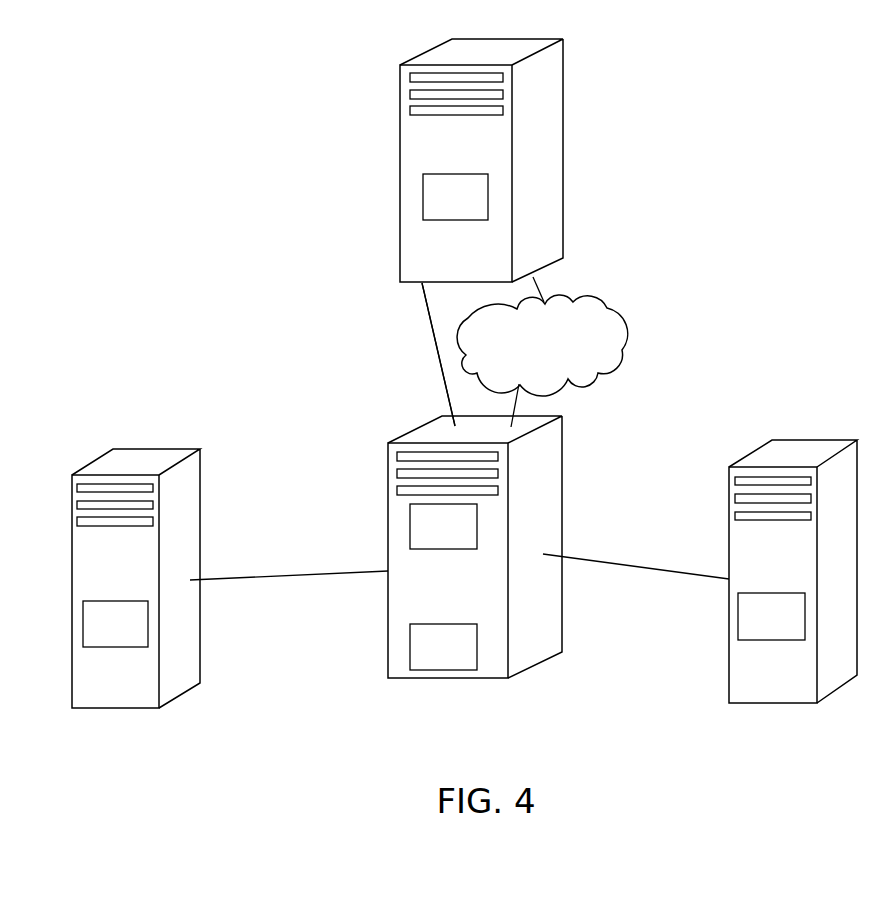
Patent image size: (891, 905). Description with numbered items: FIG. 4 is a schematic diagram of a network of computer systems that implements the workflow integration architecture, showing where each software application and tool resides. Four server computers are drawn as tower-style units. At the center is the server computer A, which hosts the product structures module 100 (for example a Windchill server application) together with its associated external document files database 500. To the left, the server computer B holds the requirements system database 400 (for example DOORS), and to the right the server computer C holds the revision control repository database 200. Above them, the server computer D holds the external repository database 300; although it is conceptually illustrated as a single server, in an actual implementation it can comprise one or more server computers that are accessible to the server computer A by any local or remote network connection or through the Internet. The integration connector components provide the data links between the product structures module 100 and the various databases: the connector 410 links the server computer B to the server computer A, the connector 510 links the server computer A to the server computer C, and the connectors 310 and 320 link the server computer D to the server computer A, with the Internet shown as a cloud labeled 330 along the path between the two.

The product structures module 100 is at (429, 656).
The revision control repository database 200 is at (758, 625).
The external repository database 300 is at (441, 206).
The integration connector component 310 is at (427, 310).
The integration connector component 320 is at (442, 379).
The integration connector component (Internet) 330 is at (532, 365).
The requirements system database 400 is at (101, 632).
The integration connector component 410 is at (292, 573).
The external document files database 500 is at (429, 535).
The integration connector component 510 is at (633, 565).
The server computer A is at (543, 648).
The server computer B is at (138, 455).
The server computer C is at (800, 448).
The server computer D is at (547, 132).